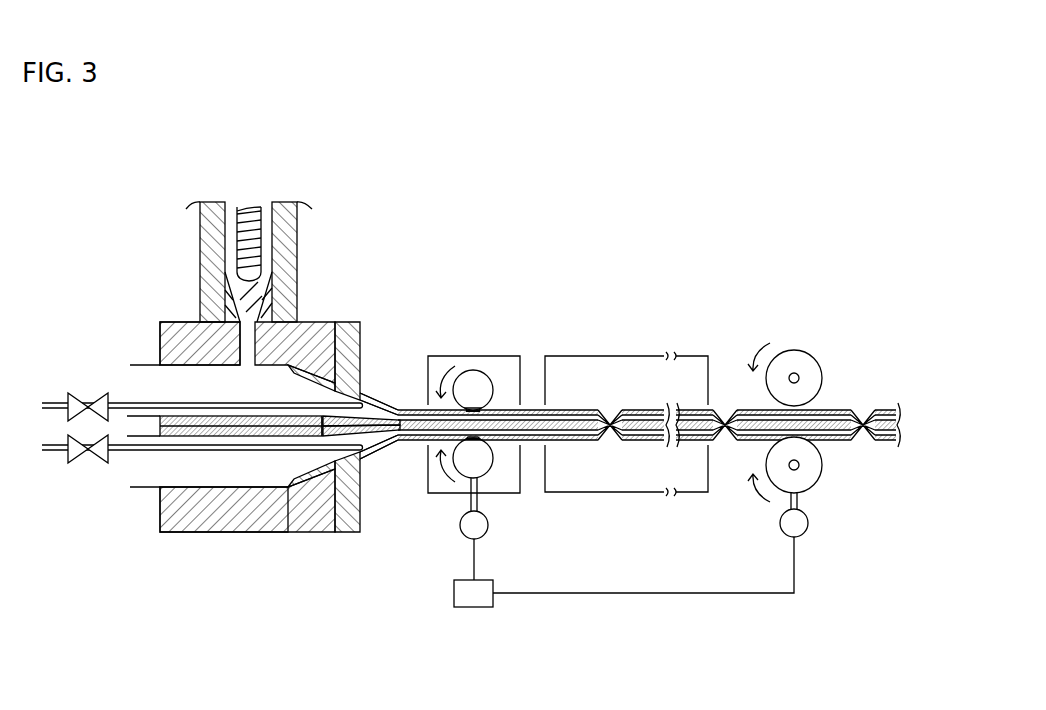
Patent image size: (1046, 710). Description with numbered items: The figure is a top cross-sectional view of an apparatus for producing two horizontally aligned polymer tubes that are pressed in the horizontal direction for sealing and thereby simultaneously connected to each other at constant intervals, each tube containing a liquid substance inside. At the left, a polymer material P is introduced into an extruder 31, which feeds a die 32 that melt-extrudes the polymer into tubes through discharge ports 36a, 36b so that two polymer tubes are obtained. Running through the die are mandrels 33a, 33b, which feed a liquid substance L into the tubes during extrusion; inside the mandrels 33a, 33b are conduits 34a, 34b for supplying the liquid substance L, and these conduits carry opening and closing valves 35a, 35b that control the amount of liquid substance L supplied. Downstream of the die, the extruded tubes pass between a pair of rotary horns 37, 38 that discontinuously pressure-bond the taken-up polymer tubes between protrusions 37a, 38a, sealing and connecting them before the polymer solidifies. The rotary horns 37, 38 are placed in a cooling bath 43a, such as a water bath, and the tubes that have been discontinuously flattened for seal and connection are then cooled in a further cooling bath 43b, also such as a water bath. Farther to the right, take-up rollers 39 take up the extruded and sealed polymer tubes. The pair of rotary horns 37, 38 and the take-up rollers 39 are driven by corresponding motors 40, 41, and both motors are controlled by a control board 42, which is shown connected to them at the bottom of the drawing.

The extruder 31 is at (283, 233).
The die 32 is at (350, 337).
The mandrel 33a is at (213, 405).
The mandrel 33b is at (208, 488).
The conduit 34a is at (120, 398).
The conduit 34b is at (120, 465).
The opening and closing valve 35a is at (82, 390).
The opening and closing valve 35b is at (80, 465).
The discharge port 36a is at (390, 388).
The discharge port 36b is at (367, 462).
The rotary horn 37 is at (473, 368).
The protrusion 37a is at (490, 411).
The rotary horn 38 is at (493, 473).
The protrusion 38a is at (487, 425).
The take-up rollers 39 is at (808, 352).
The motor 40 is at (462, 532).
The motor 41 is at (808, 523).
The control board 42 is at (454, 594).
The cooling bath 43a is at (497, 356).
The cooling bath 43b is at (690, 375).
The polymer material P is at (212, 248).
The liquid substance L is at (182, 322).